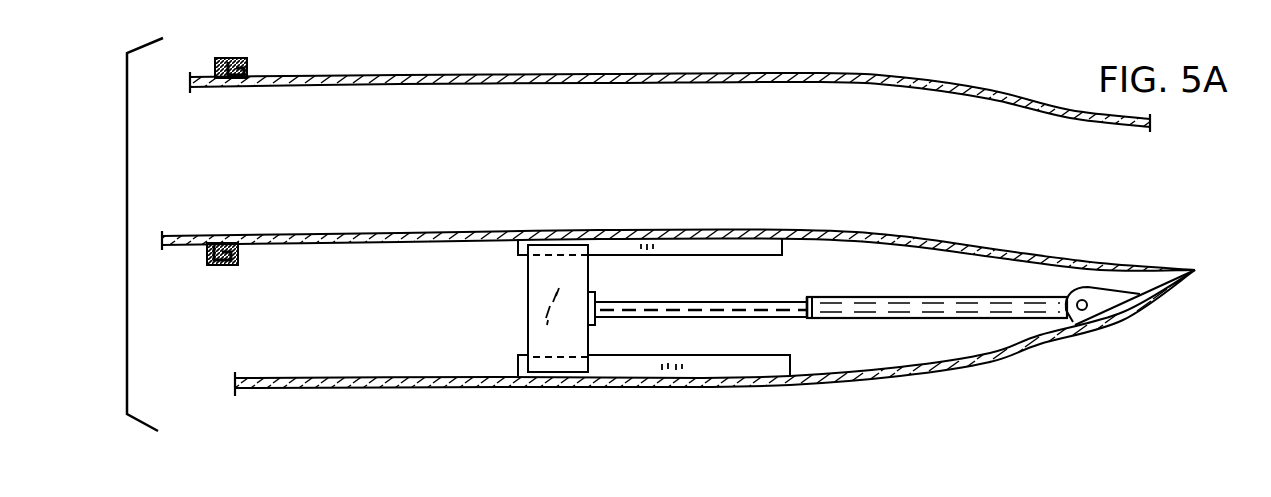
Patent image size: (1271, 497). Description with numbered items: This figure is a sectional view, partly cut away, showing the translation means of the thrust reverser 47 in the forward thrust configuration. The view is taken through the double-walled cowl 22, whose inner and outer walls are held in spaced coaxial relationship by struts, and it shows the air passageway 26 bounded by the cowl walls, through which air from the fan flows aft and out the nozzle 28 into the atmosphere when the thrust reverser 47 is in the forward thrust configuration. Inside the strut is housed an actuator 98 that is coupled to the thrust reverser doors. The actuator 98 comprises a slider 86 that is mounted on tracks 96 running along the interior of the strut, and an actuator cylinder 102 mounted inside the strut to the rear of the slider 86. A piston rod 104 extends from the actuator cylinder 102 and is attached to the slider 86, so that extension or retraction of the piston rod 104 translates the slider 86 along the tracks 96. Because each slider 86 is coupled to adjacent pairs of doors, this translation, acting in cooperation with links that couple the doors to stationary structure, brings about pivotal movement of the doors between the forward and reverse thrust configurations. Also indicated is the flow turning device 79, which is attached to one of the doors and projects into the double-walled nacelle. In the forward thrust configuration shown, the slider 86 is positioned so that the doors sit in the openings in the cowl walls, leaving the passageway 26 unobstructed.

The double-walled cowl 22 is at (1050, 345).
The passageway 26 is at (413, 157).
The nozzle 28 is at (1130, 195).
The thrust reverser 47 is at (786, 189).
The flow turning device 79 is at (627, 365).
The slider 86 is at (572, 276).
The tracks 96 is at (766, 257).
The actuator 98 is at (832, 334).
The actuator cylinder 102 is at (833, 297).
The piston rod 104 is at (664, 300).